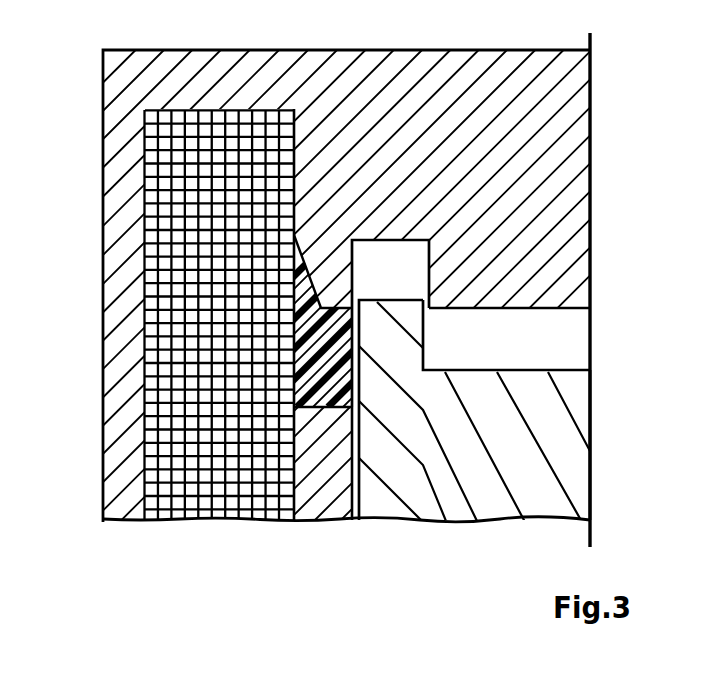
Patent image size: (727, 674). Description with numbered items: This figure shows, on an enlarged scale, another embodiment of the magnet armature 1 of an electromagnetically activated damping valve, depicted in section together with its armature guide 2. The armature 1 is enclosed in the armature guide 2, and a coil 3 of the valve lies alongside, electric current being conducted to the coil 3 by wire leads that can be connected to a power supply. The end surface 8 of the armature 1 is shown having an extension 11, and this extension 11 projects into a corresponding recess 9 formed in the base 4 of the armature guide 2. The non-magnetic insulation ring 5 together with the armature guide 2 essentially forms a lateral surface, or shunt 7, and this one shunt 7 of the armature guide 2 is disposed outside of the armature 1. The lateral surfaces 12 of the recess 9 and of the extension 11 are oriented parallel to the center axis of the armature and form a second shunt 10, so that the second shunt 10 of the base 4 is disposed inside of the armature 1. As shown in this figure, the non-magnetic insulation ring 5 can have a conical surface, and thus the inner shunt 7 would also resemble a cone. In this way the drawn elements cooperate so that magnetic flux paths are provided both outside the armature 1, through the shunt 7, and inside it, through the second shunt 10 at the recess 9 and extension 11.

The magnet armature 1 is at (415, 483).
The armature guide 2 is at (332, 490).
The coil 3 is at (215, 340).
The base 4 is at (430, 226).
The non-magnetic insulation ring 5 is at (312, 405).
The shunt 7 is at (357, 282).
The end surface 8 is at (500, 375).
The recess 9 is at (387, 255).
The second shunt 10 is at (435, 247).
The extension 11 is at (398, 348).
The lateral surfaces 12 is at (427, 350).